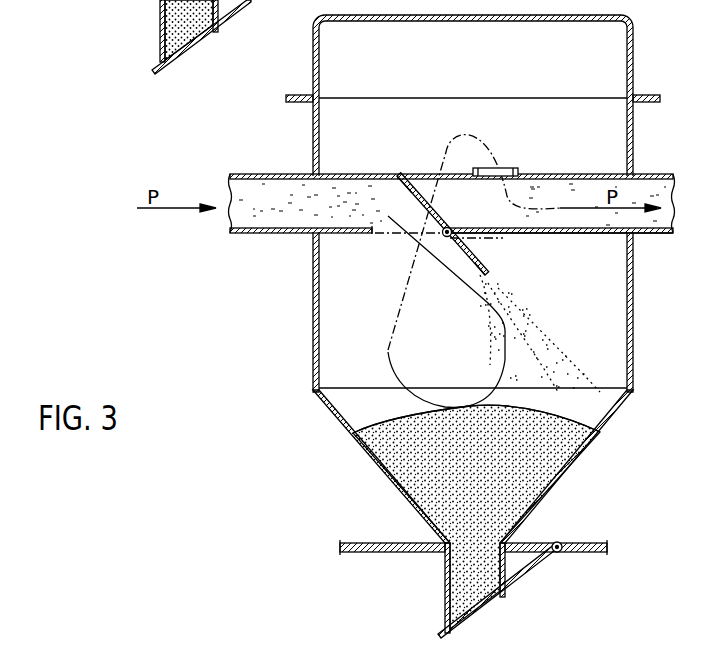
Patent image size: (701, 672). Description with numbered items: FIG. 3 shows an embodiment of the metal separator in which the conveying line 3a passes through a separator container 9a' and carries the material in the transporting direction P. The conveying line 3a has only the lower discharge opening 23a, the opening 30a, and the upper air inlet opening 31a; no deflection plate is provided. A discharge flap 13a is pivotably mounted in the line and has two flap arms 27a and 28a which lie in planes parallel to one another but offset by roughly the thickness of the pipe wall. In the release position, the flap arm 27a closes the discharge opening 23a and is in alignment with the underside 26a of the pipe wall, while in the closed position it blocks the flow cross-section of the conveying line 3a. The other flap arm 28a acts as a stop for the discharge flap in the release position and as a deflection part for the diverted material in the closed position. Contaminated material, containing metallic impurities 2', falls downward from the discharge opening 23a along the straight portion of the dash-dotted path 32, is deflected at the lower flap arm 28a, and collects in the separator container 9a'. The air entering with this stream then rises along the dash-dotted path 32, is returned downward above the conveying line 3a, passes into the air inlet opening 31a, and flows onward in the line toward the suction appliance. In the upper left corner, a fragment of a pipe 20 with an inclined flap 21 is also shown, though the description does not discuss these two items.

The conveying pipe 20 is at (160, 40).
The flap 21 is at (200, 40).
The conveying line 3a is at (247, 174).
The opening 30a is at (397, 176).
The flap arm 27a is at (417, 173).
The upper air inlet opening 31a is at (480, 178).
The lower discharge opening 23a is at (372, 237).
The discharge flap 13a is at (463, 258).
The flap arm 28a is at (488, 269).
The underside of the pipe wall 26a is at (598, 234).
The separator container 9a' is at (483, 326).
The dash-dotted path 32 is at (508, 333).
The metallic impurities 2' is at (508, 494).